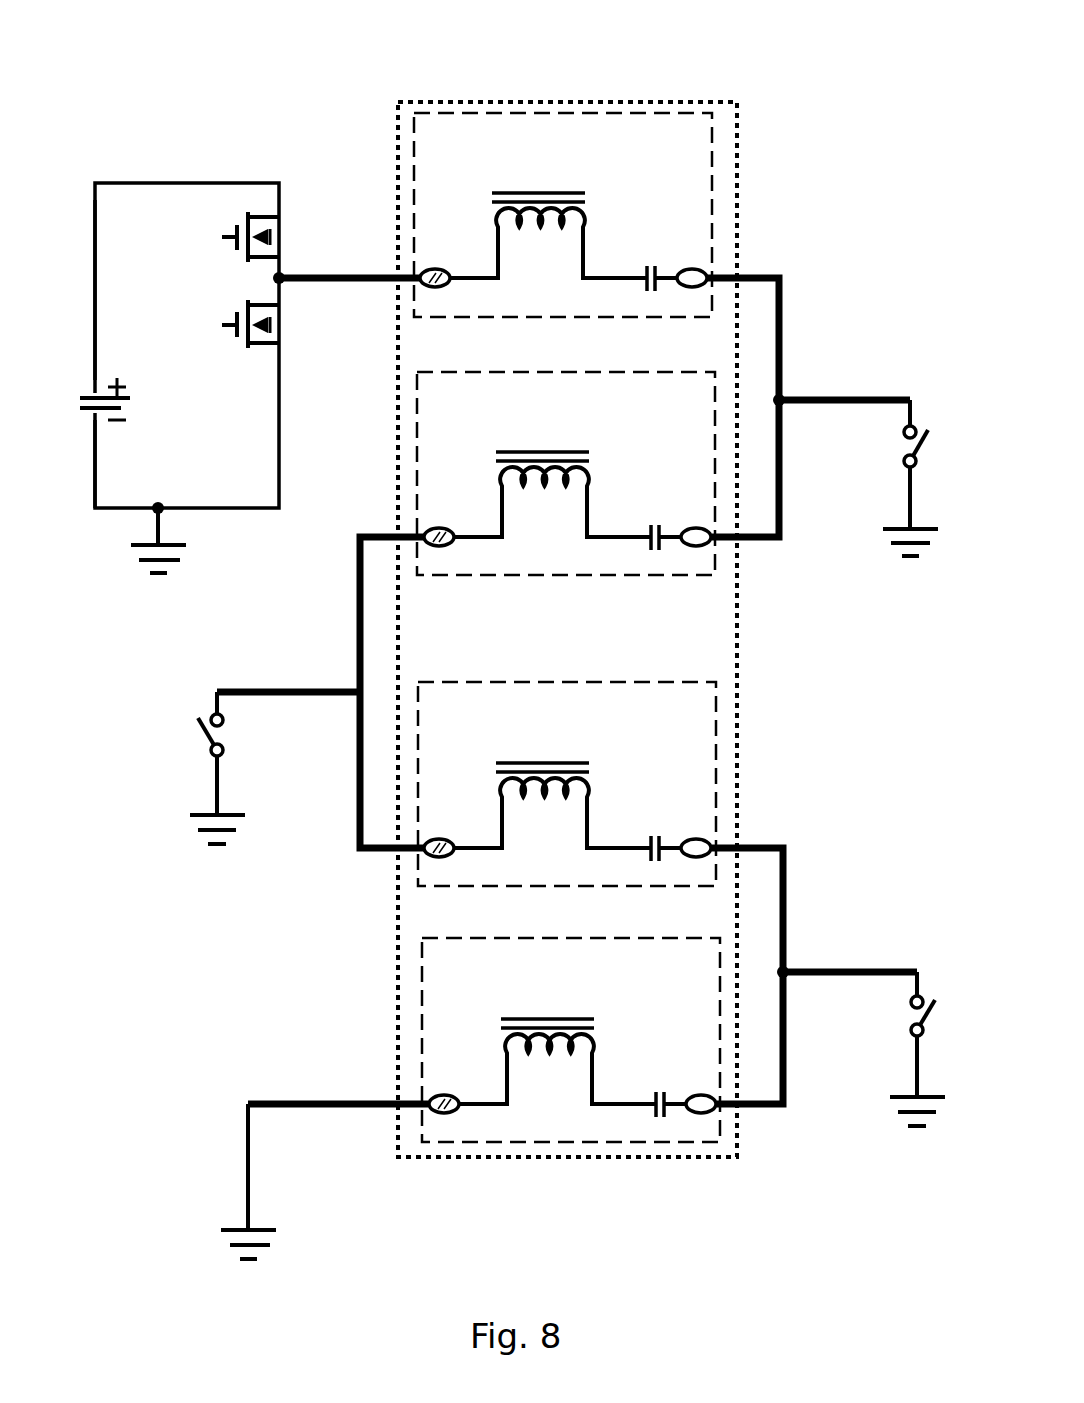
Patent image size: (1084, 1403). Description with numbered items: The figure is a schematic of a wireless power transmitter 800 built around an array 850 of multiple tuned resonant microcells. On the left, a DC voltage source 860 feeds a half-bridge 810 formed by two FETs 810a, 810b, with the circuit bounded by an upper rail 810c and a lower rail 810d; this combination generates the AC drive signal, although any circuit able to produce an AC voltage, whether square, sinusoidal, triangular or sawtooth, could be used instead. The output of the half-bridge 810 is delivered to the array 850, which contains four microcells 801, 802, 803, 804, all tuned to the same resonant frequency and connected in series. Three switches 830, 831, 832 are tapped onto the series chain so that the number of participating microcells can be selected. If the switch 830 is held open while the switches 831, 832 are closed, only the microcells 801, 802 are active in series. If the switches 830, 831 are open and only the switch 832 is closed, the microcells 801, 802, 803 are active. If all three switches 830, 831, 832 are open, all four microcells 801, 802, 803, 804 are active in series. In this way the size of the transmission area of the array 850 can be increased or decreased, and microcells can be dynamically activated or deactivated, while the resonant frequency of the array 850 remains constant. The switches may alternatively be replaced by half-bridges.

The wireless power transmitter 800 is at (284, 62).
The half-bridge 810 is at (175, 182).
The FET 810a is at (282, 232).
The FET 810b is at (280, 330).
The upper rail 810c is at (95, 252).
The lower rail 810d is at (95, 483).
The DC voltage source 860 is at (131, 408).
The array 850 is at (731, 100).
The microcell 801 is at (575, 118).
The microcell 802 is at (600, 575).
The microcell 803 is at (525, 683).
The microcell 804 is at (630, 1142).
The switch 830 is at (896, 456).
The switch 831 is at (200, 742).
The switch 832 is at (905, 1023).